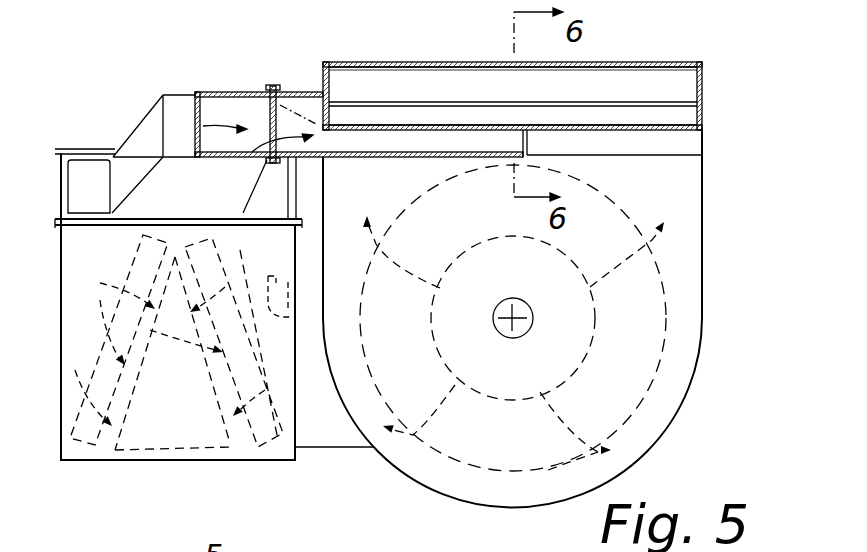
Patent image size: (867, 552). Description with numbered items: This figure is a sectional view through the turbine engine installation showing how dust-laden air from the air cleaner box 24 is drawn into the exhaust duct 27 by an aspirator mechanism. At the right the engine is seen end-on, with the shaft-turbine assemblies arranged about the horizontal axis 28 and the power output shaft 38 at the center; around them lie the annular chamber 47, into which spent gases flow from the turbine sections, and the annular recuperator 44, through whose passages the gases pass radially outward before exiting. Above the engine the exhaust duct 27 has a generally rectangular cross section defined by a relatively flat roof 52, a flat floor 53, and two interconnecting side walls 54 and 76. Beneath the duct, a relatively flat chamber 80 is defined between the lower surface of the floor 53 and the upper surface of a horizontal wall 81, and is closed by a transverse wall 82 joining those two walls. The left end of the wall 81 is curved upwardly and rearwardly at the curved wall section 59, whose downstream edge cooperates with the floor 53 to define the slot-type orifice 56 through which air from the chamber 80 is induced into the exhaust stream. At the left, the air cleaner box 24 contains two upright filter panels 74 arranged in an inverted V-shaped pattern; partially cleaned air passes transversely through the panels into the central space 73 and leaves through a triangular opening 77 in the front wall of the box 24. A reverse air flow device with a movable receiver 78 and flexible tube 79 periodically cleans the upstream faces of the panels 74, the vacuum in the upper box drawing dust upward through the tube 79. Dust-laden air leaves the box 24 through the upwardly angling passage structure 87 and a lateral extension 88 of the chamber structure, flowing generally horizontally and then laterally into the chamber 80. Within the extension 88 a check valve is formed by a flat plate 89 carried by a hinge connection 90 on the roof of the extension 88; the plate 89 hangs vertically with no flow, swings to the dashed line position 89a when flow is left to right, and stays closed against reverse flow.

The air cleaner box 24 is at (102, 462).
The exhaust duct 27 is at (688, 88).
The horizontal axis 28 is at (515, 315).
The power output shaft 38 is at (505, 305).
The annular recuperator 44 is at (665, 292).
The annular chamber 47 is at (457, 357).
The roof 52 is at (427, 61).
The floor 53 is at (632, 130).
The side wall 54 is at (323, 62).
The orifice 56 is at (398, 115).
The curved wall section 59 is at (553, 100).
The central space 73 is at (178, 282).
The filter panels 74 is at (118, 362).
The side wall 76 is at (700, 98).
The triangular opening 77 is at (158, 447).
The movable receiver 78 is at (262, 350).
The flexible tube 79 is at (265, 296).
The chamber 80 is at (453, 140).
The horizontal wall 81 is at (338, 158).
The transverse wall 82 is at (527, 140).
The upwardly angling passage structure 87 is at (133, 132).
The lateral extension 88 is at (218, 92).
The flat plate 89 is at (272, 130).
The dashed line position 89a is at (300, 113).
The hinge connection 90 is at (268, 90).